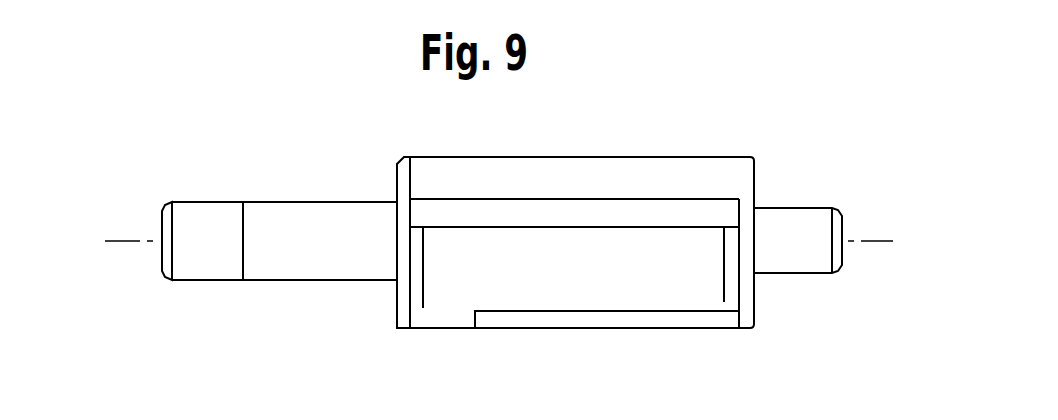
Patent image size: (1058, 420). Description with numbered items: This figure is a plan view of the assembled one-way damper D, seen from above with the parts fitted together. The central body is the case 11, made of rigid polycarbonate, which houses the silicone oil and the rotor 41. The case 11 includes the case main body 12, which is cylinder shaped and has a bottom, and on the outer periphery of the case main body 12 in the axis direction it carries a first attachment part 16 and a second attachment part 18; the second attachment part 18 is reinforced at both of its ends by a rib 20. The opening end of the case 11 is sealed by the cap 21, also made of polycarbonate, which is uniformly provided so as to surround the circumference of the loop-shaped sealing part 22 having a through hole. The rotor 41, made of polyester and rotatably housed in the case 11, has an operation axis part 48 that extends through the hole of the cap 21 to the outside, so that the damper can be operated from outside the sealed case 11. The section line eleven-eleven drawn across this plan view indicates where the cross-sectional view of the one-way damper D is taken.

The case 11 is at (122, 245).
The case main body 12 is at (448, 307).
The first attachment part 16 is at (793, 243).
The second attachment part 18 is at (553, 218).
The rib 20 is at (423, 282).
The cap 21 is at (391, 184).
The sealing part 22 is at (403, 318).
The rotor 41 is at (276, 196).
The operation axis part 48 is at (313, 272).
The one-way damper D is at (731, 143).